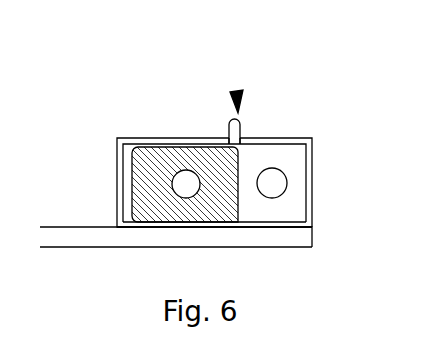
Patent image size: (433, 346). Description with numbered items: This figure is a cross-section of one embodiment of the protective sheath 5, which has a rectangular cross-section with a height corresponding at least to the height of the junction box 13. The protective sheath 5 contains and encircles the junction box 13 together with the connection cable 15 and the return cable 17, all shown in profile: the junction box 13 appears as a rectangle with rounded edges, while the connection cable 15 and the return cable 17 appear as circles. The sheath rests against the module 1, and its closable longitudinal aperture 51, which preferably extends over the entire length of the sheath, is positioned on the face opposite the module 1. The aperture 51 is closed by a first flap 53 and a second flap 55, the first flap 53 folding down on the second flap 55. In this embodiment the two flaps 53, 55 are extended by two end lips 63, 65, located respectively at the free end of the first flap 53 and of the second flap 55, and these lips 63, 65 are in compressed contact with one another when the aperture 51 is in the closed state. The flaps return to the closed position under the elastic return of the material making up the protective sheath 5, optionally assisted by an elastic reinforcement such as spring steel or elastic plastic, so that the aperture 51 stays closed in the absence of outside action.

The module 1 is at (55, 226).
The protective sheath 5 is at (116, 185).
The junction box 13 is at (145, 226).
The connection cable 15 is at (197, 228).
The return cable 17 is at (272, 200).
The closable longitudinal aperture 51 is at (242, 91).
The first flap 53 is at (177, 143).
The second flap 55 is at (270, 137).
The first end lip 63 is at (245, 137).
The second end lip 65 is at (228, 128).